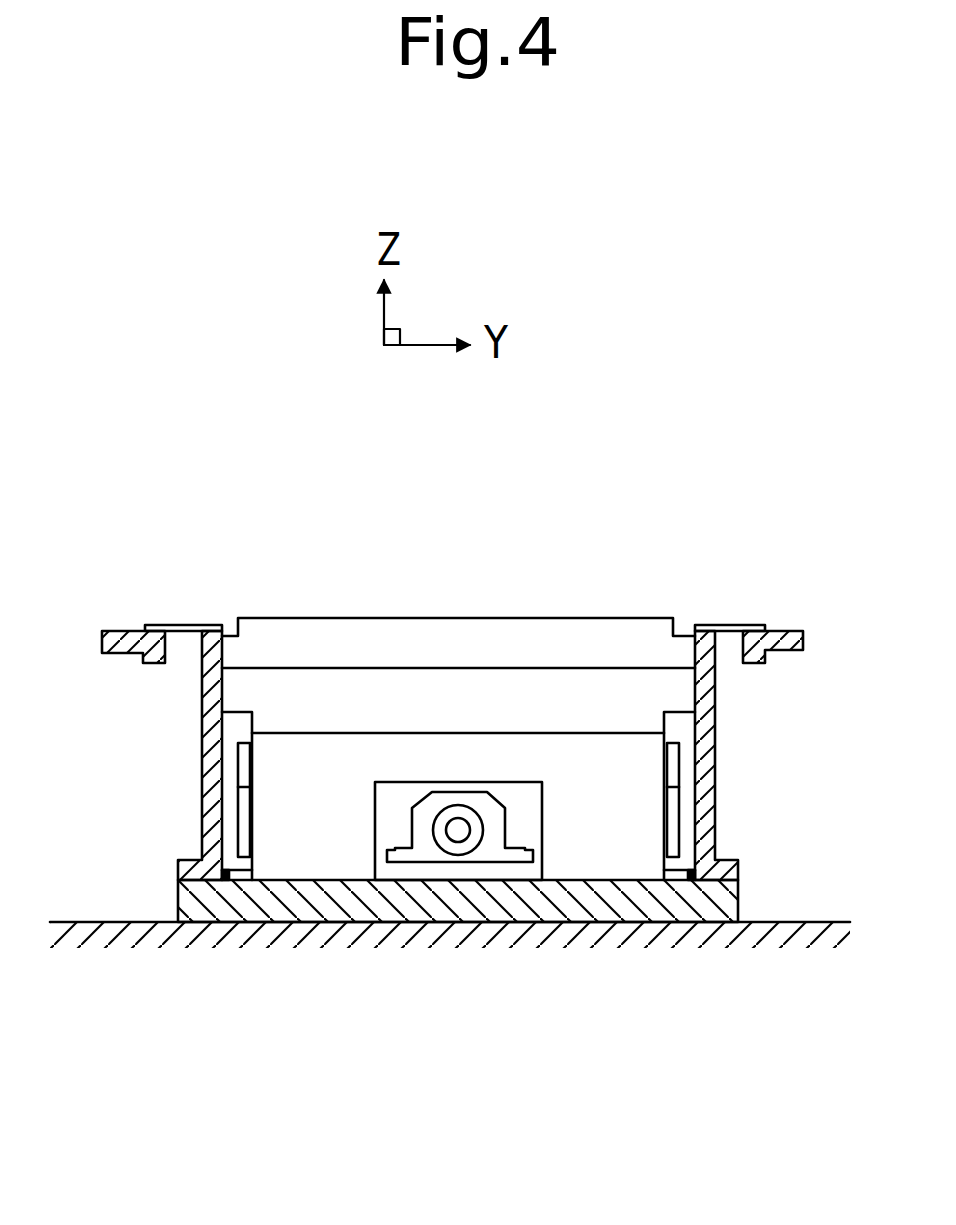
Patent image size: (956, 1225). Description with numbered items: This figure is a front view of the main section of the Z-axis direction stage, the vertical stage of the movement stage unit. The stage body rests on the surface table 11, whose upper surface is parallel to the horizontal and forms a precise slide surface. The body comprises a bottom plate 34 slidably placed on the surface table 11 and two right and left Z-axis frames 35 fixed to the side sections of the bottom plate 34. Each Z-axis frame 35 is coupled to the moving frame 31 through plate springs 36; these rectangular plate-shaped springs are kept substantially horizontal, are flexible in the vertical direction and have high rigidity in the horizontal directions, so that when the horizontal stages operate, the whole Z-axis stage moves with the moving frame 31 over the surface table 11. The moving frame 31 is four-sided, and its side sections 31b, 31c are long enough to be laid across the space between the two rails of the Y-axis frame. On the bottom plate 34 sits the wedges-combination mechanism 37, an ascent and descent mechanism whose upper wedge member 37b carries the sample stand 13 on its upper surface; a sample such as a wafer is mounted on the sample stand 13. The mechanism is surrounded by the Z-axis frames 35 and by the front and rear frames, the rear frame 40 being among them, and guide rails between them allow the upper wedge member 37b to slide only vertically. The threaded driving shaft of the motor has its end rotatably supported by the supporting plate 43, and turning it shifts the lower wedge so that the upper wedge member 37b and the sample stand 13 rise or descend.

The surface table 11 is at (110, 933).
The sample stand 13 is at (323, 618).
The moving frame 31 is at (476, 682).
The side section of moving frame 31b is at (774, 626).
The side section of moving frame 31c is at (120, 630).
The bottom plate 34 is at (512, 895).
The Z-axis frame 35 is at (210, 723).
The plate spring 36 is at (185, 625).
The wedges-combination mechanism 37 is at (526, 692).
The upper wedge member 37b is at (442, 682).
The rear frame 40 is at (302, 792).
The supporting plate 43 is at (448, 843).